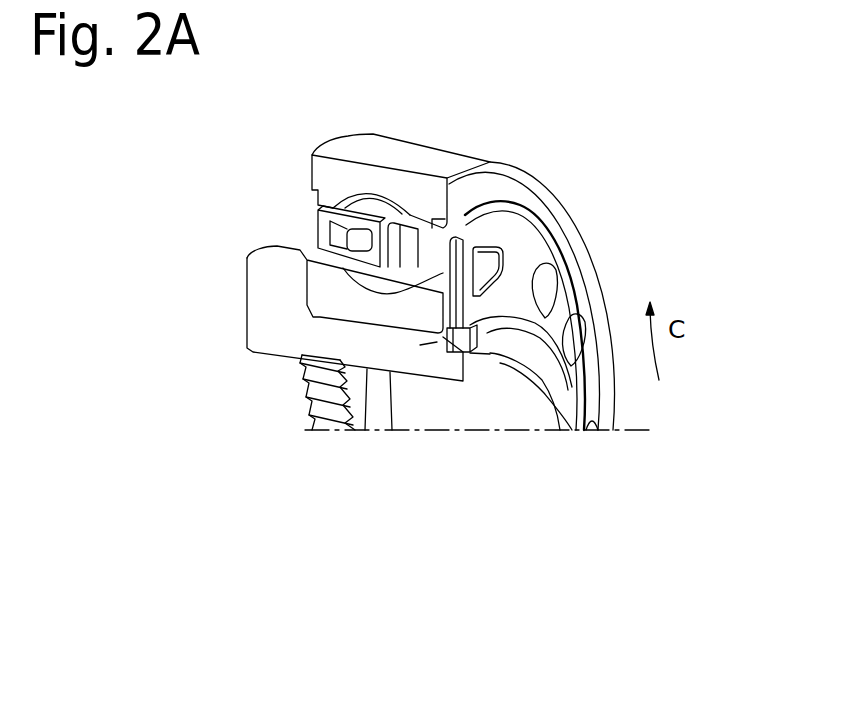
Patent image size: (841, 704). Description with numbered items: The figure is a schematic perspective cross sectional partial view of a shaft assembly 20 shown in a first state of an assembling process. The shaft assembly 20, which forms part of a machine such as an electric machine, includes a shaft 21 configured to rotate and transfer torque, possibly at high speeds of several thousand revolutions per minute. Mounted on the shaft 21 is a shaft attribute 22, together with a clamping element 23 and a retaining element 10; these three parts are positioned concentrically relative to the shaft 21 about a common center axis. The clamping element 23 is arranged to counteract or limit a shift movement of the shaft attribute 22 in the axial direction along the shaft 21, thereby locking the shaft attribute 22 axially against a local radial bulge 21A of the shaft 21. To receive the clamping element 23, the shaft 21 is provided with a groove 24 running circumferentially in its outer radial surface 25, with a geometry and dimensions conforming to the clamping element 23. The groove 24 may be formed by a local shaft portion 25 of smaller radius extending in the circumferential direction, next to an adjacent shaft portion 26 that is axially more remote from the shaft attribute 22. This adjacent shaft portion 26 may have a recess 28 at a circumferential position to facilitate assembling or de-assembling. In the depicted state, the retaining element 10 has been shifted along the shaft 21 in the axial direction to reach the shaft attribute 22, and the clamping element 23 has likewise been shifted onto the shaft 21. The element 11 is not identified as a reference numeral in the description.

The retaining element 10 is at (527, 257).
The rack 11 is at (485, 238).
The shaft assembly 20 is at (665, 192).
The shaft 21 is at (355, 349).
The local radial bulge 21A is at (270, 289).
The shaft attribute 22 is at (323, 172).
The clamping element 23 is at (489, 344).
The groove 24 is at (483, 353).
The outer radial surface 25 is at (437, 342).
The adjacent shaft portion 26 is at (499, 355).
The recess 28 is at (492, 353).